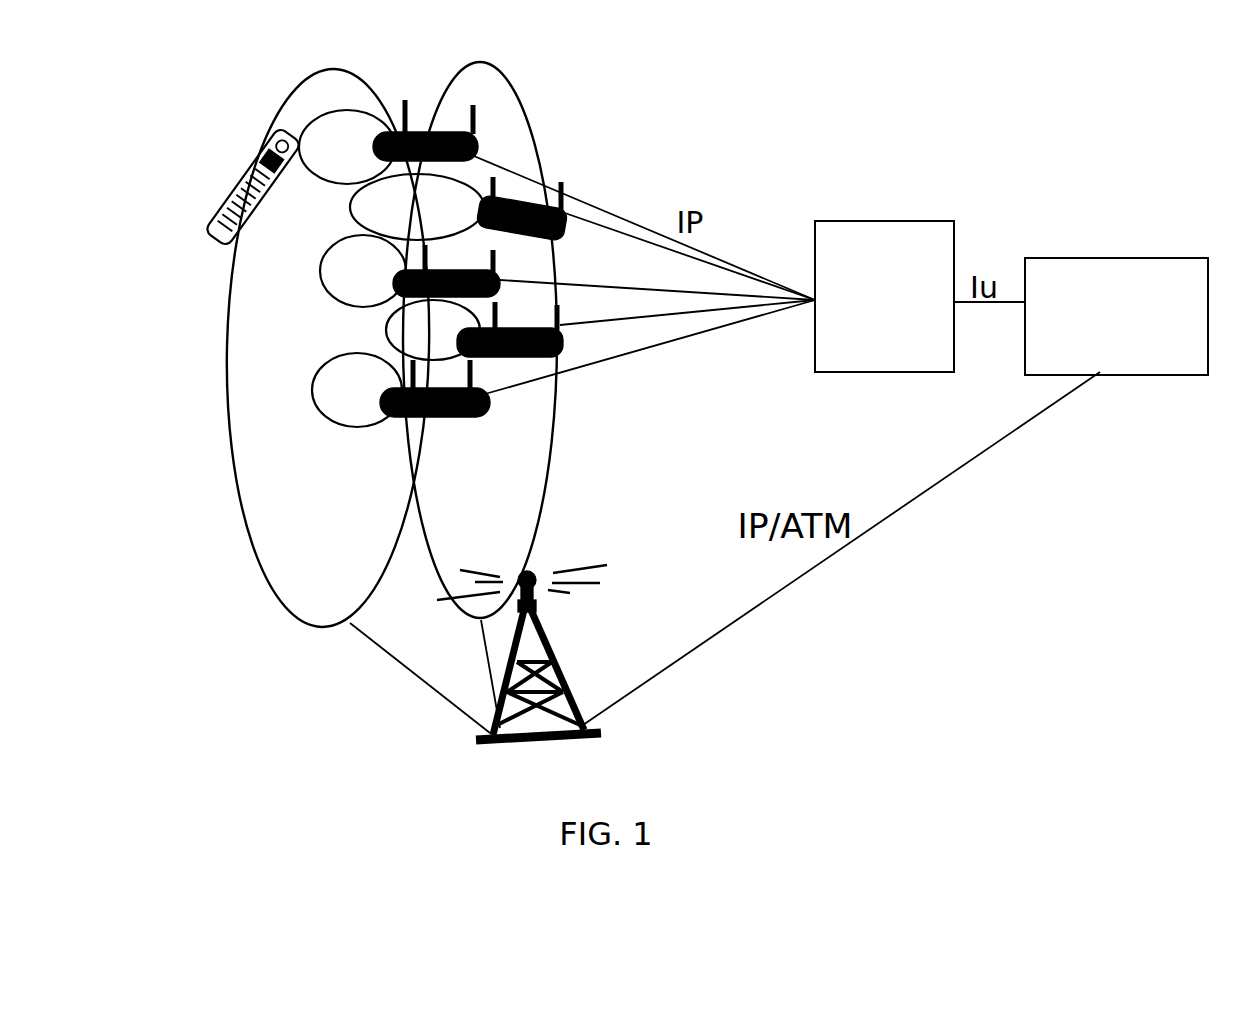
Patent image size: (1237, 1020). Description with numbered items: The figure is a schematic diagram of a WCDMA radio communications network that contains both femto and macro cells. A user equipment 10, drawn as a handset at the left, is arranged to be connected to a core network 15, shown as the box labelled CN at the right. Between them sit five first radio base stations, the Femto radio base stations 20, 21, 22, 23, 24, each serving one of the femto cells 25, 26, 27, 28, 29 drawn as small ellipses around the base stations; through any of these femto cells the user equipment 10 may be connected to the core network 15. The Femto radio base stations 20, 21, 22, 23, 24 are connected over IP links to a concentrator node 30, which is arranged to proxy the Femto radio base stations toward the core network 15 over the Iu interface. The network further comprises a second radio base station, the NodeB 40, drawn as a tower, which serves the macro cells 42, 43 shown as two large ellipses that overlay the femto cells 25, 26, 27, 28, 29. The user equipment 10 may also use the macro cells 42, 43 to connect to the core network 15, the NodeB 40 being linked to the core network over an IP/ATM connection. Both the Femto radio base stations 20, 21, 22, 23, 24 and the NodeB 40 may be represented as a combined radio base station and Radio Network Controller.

The user equipment 10 is at (240, 242).
The core network 15 is at (1097, 315).
The Femto radio base station 20 is at (433, 132).
The Femto radio base station 21 is at (527, 200).
The Femto radio base station 22 is at (503, 278).
The Femto radio base station 23 is at (540, 328).
The Femto radio base station 24 is at (447, 424).
The femto cell 25 is at (366, 167).
The femto cell 26 is at (367, 223).
The femto cell 27 is at (348, 292).
The femto cell 28 is at (412, 352).
The femto cell 29 is at (337, 412).
The concentrator node 30 is at (866, 275).
The NodeB 40 is at (553, 660).
The macro cell 42 is at (338, 548).
The macro cell 43 is at (490, 550).